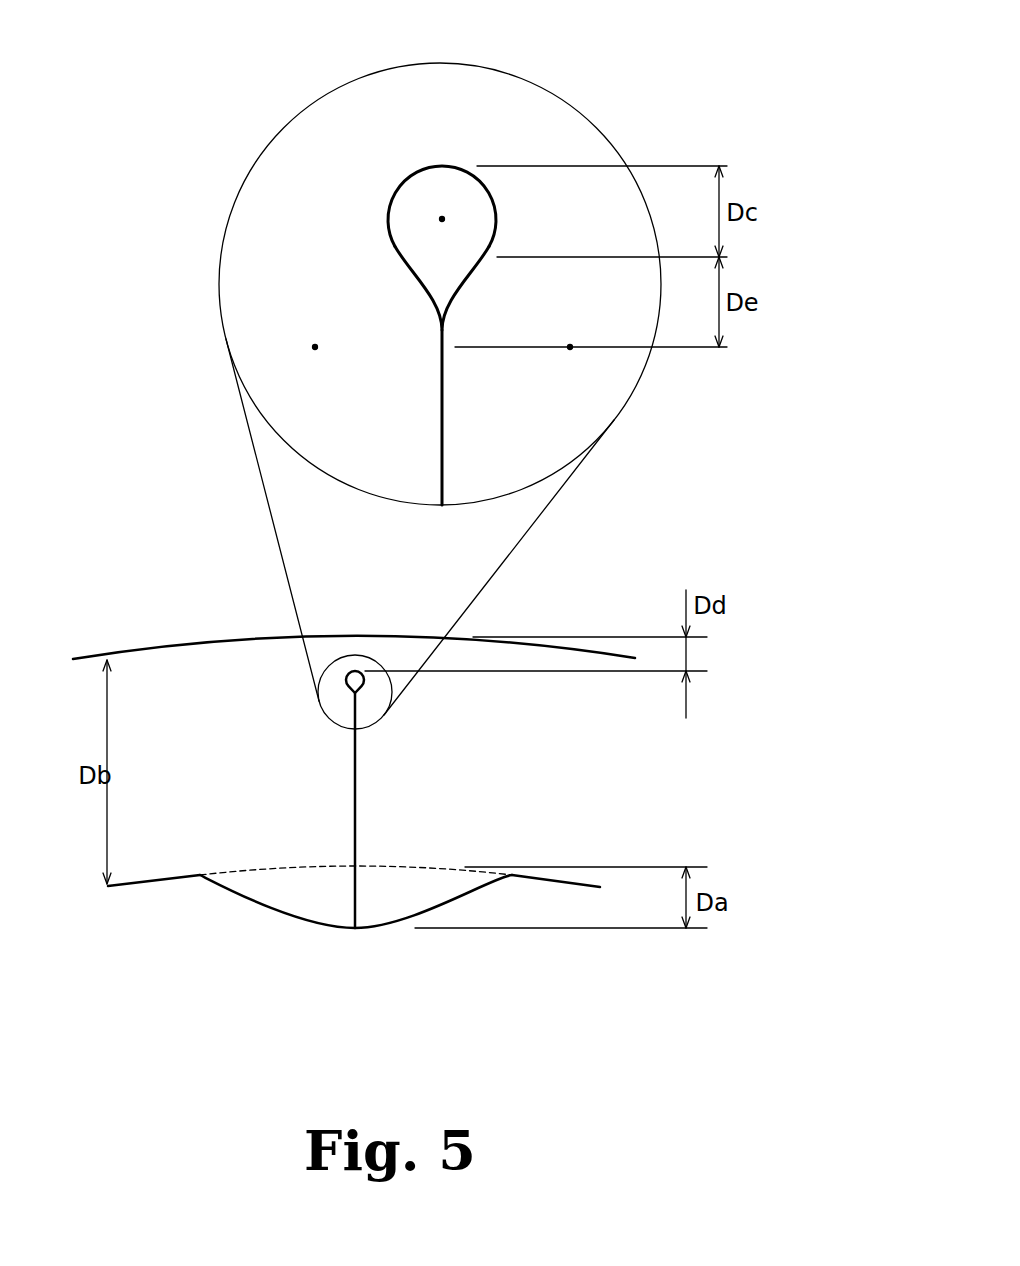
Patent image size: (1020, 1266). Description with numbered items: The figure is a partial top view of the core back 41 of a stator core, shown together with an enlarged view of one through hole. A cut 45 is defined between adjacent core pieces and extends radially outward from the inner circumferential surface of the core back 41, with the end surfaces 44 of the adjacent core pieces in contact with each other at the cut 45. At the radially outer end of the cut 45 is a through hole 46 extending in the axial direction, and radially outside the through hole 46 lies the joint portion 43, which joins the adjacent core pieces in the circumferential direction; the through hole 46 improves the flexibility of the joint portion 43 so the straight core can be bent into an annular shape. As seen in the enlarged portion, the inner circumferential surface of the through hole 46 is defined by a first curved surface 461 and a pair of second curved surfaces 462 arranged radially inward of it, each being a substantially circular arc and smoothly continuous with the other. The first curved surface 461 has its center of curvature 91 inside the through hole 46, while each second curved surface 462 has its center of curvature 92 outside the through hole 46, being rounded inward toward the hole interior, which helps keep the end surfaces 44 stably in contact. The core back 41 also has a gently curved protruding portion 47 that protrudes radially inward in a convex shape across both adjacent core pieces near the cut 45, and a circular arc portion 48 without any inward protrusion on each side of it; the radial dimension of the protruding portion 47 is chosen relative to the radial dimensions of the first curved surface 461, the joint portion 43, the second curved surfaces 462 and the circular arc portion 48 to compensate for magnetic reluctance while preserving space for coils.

The core back 41 is at (170, 555).
The joint portion 43 is at (358, 645).
The end surfaces 44 is at (353, 845).
The cut 45 is at (350, 775).
The through hole 46 is at (323, 356).
The protruding portion 47 is at (285, 893).
The circular arc portion 48 is at (143, 730).
The center of curvature 91 is at (448, 219).
The center of curvature 92 is at (315, 350).
The first curved surface 461 is at (477, 180).
The second curved surfaces 462 is at (462, 278).